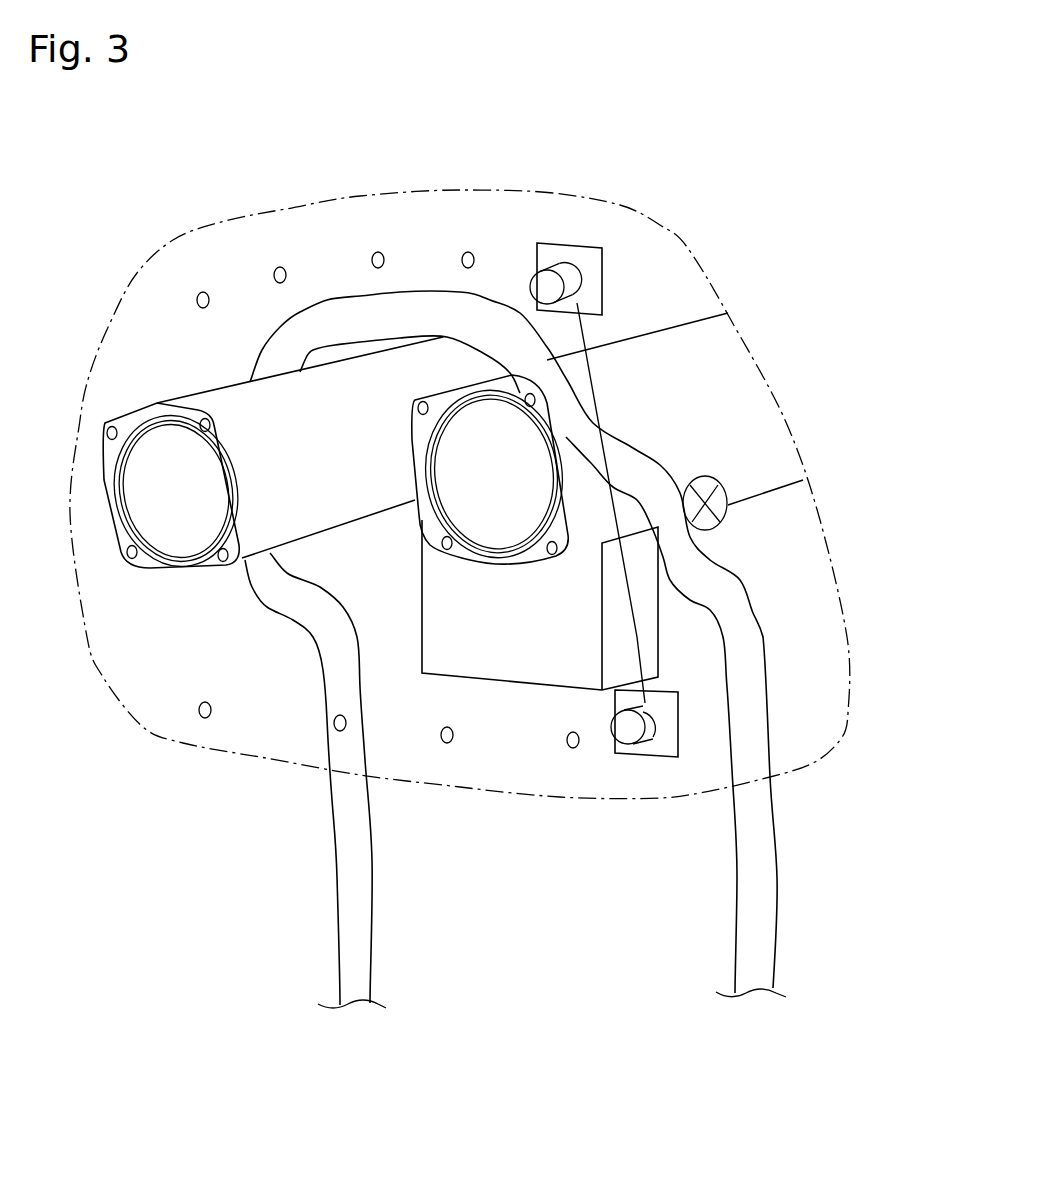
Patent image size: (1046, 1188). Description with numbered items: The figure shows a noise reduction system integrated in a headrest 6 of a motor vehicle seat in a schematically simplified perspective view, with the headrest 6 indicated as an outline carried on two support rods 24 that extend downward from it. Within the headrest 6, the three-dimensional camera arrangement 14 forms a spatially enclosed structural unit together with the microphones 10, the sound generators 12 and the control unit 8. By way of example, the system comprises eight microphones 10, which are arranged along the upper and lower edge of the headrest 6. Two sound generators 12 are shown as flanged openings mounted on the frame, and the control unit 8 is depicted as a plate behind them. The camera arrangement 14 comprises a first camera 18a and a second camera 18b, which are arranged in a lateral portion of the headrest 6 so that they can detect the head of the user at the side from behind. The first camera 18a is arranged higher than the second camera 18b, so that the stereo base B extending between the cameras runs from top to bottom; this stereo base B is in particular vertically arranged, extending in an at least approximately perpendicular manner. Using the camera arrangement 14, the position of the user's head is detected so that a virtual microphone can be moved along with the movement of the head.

The headrest 6 is at (553, 192).
The control unit 8 is at (660, 625).
The microphone 10 is at (467, 258).
The sound generator 12 is at (143, 560).
The 3D camera arrangement 14 is at (622, 503).
The first camera 18a is at (577, 270).
The second camera 18b is at (647, 740).
The support rods 24 is at (348, 942).
The stereo base B is at (613, 487).